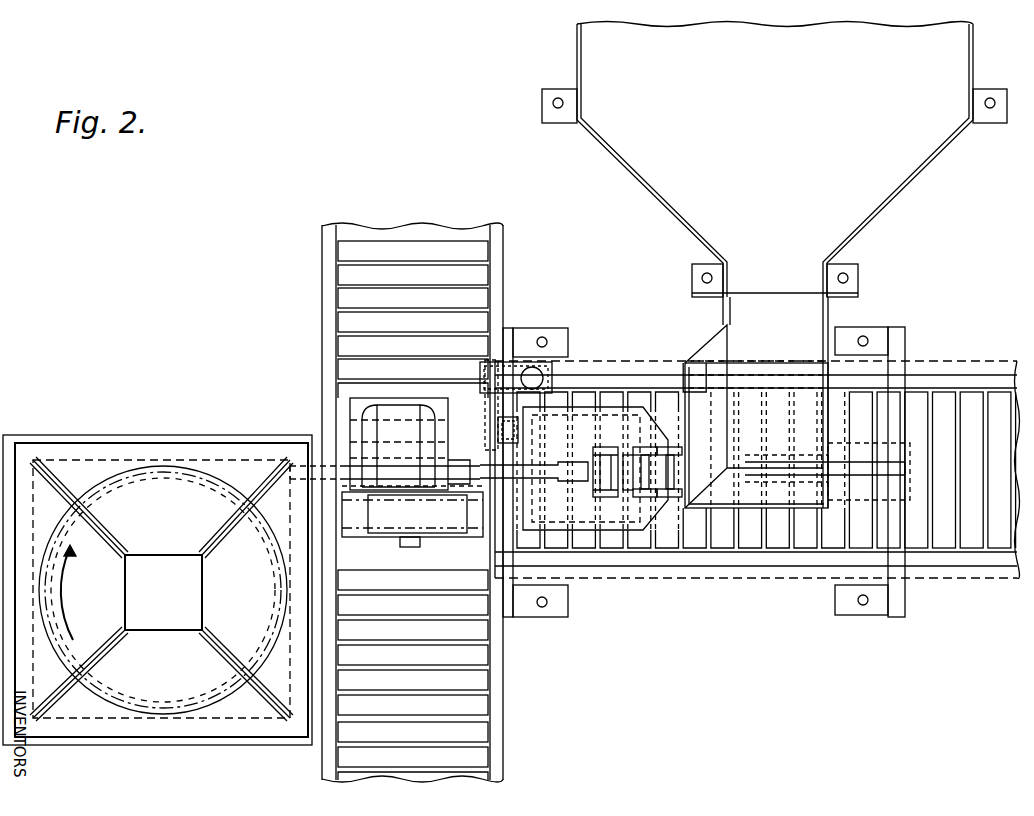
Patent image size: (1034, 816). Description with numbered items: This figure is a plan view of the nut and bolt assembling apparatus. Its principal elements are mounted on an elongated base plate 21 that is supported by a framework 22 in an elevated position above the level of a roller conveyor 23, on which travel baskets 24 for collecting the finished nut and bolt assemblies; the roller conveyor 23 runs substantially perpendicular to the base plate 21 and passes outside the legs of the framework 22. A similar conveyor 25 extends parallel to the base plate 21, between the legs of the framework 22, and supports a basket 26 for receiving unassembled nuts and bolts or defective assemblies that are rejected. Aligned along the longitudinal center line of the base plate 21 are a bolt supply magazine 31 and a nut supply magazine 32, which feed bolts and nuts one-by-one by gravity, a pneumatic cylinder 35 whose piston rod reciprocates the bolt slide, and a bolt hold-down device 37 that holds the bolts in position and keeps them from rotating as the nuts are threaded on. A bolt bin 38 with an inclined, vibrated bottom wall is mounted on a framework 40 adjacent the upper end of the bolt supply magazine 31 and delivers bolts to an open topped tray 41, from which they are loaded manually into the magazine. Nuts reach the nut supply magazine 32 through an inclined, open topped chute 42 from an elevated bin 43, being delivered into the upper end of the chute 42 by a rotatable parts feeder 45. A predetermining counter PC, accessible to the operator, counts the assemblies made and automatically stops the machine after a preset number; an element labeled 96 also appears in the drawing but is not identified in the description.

The base plate 21 is at (862, 490).
The framework 22 is at (900, 565).
The roller conveyor 23 is at (345, 345).
The basket 24 is at (378, 525).
The conveyor 25 is at (697, 535).
The basket 26 is at (611, 515).
The bolt supply magazine 31 is at (660, 432).
The nut supply magazine 32 is at (559, 458).
The pneumatic cylinder 35 is at (860, 465).
The bolt hold-down device 37 is at (603, 465).
The bolt bin 38 is at (786, 178).
The framework 40 is at (840, 292).
The open topped tray 41 is at (756, 455).
The chute 42 is at (444, 470).
The bin 43 is at (174, 528).
The rotatable parts feeder 45 is at (177, 705).
The motor 96 is at (412, 437).
The predetermining counter PC is at (492, 420).